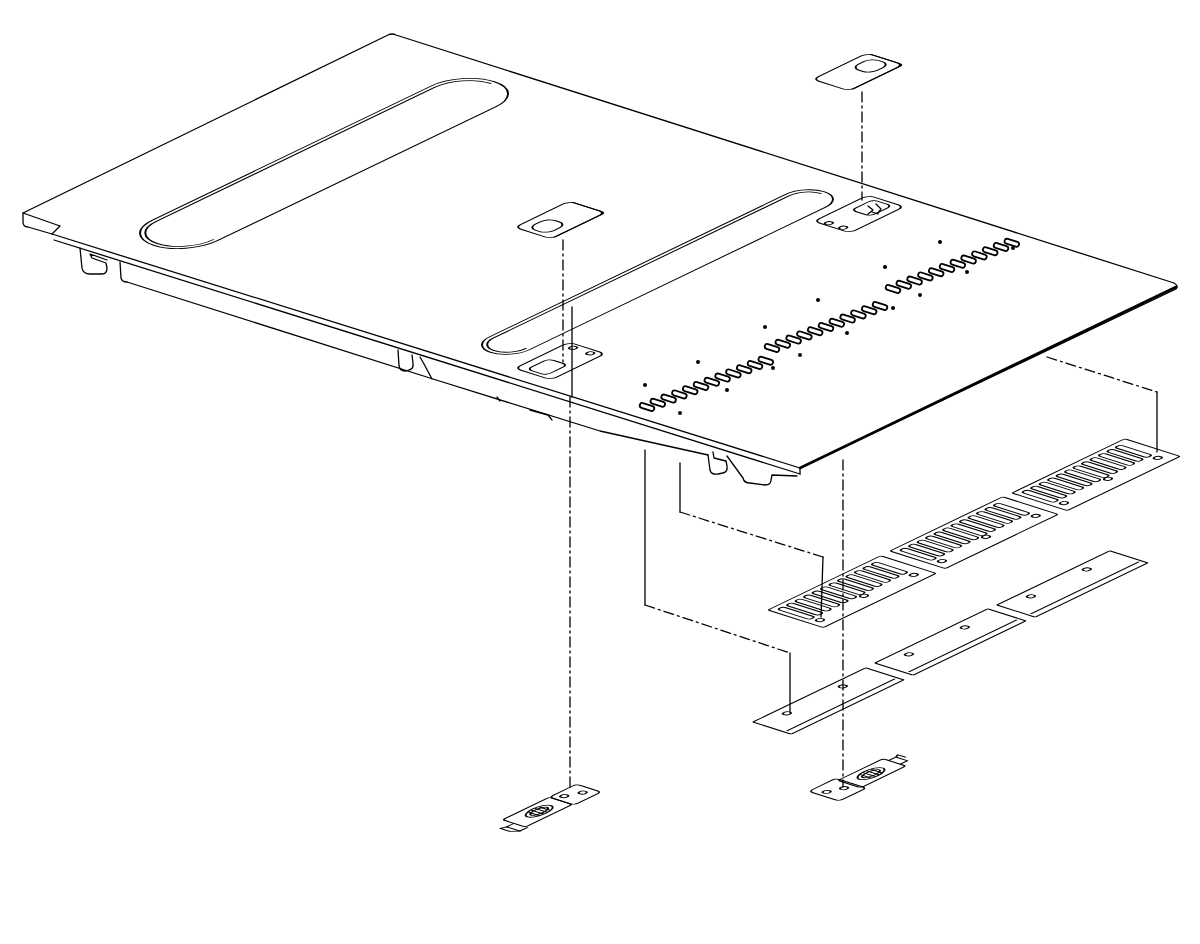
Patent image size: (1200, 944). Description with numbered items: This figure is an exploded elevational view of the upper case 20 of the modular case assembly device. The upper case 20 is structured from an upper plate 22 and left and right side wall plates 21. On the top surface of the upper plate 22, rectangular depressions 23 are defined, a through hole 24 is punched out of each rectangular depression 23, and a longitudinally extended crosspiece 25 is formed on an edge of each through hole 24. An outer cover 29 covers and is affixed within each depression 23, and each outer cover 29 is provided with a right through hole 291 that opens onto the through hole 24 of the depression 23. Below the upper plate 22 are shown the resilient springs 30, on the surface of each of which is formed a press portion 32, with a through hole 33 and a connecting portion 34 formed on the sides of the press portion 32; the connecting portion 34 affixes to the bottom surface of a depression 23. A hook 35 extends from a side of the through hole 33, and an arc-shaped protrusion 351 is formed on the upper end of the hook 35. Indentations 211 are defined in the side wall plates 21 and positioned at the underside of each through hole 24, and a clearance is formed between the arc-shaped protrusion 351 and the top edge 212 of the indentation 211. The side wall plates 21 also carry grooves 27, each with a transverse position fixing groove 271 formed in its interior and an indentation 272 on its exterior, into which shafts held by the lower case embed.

The upper case 20 is at (1005, 150).
The side wall plate 21 is at (463, 392).
The indentation 211 is at (541, 406).
The top edge 212 is at (510, 398).
The upper plate 22 is at (606, 120).
The rectangular depression 23 is at (596, 352).
The through hole 24 is at (541, 365).
The crosspiece 25 is at (892, 208).
The groove 27 is at (428, 380).
The transverse position fixing groove 271 is at (400, 364).
The slot 272 is at (433, 390).
The outer cover 29 is at (562, 207).
The right through hole 291 is at (540, 221).
The resilient spring 30 is at (557, 803).
The press portion 32 is at (565, 810).
The through hole 33 is at (532, 808).
The connecting portion 34 is at (590, 791).
The hook 35 is at (530, 841).
The arc-shaped protrusion 351 is at (520, 829).